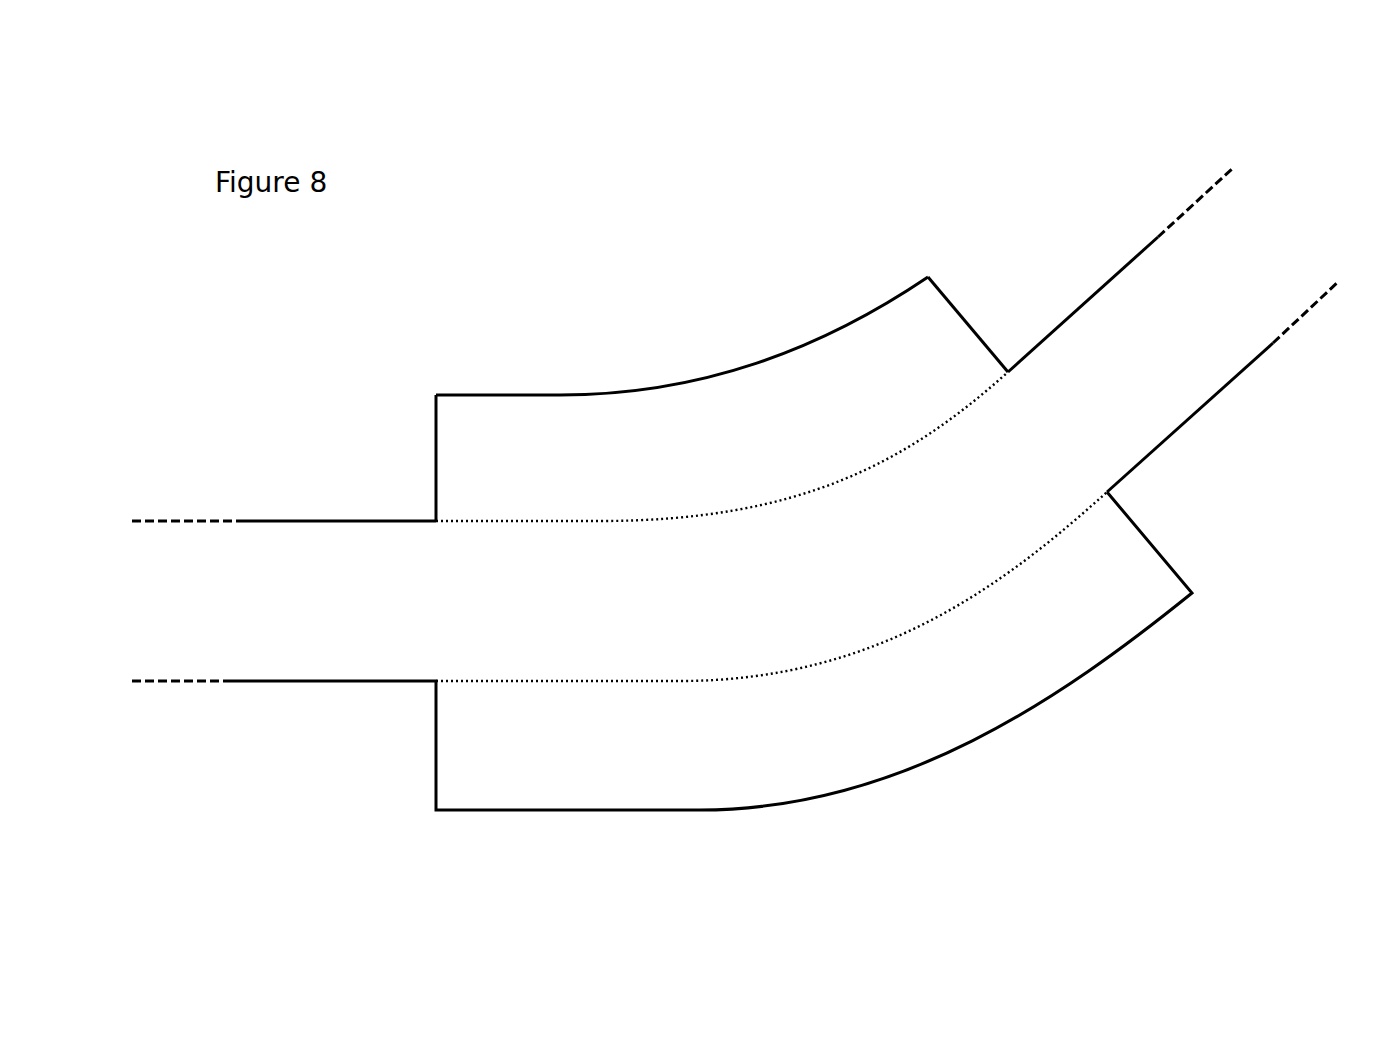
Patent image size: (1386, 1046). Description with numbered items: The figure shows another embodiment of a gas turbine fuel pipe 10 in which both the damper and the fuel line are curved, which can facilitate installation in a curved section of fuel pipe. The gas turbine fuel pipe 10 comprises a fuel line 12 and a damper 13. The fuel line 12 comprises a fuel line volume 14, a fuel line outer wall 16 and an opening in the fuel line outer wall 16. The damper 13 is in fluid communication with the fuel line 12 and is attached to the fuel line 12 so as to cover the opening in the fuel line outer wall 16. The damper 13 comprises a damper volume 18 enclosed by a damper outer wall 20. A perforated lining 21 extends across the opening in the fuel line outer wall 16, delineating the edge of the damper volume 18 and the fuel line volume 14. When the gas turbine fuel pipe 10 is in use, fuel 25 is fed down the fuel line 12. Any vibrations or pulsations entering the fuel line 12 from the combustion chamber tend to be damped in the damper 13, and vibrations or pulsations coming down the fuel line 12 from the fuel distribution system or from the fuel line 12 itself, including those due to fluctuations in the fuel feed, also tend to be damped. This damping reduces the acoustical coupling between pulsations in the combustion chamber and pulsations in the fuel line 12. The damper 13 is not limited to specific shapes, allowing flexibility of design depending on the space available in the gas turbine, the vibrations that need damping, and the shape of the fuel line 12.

The gas turbine fuel pipe 10 is at (951, 152).
The fuel line 12 is at (252, 731).
The damper 13 is at (790, 268).
The fuel line volume 14 is at (373, 552).
The fuel line outer wall 16 is at (400, 521).
The damper volume 18 is at (650, 457).
The damper outer wall 20 is at (457, 395).
The perforated lining 21 is at (552, 521).
The fuel 25 is at (1283, 239).